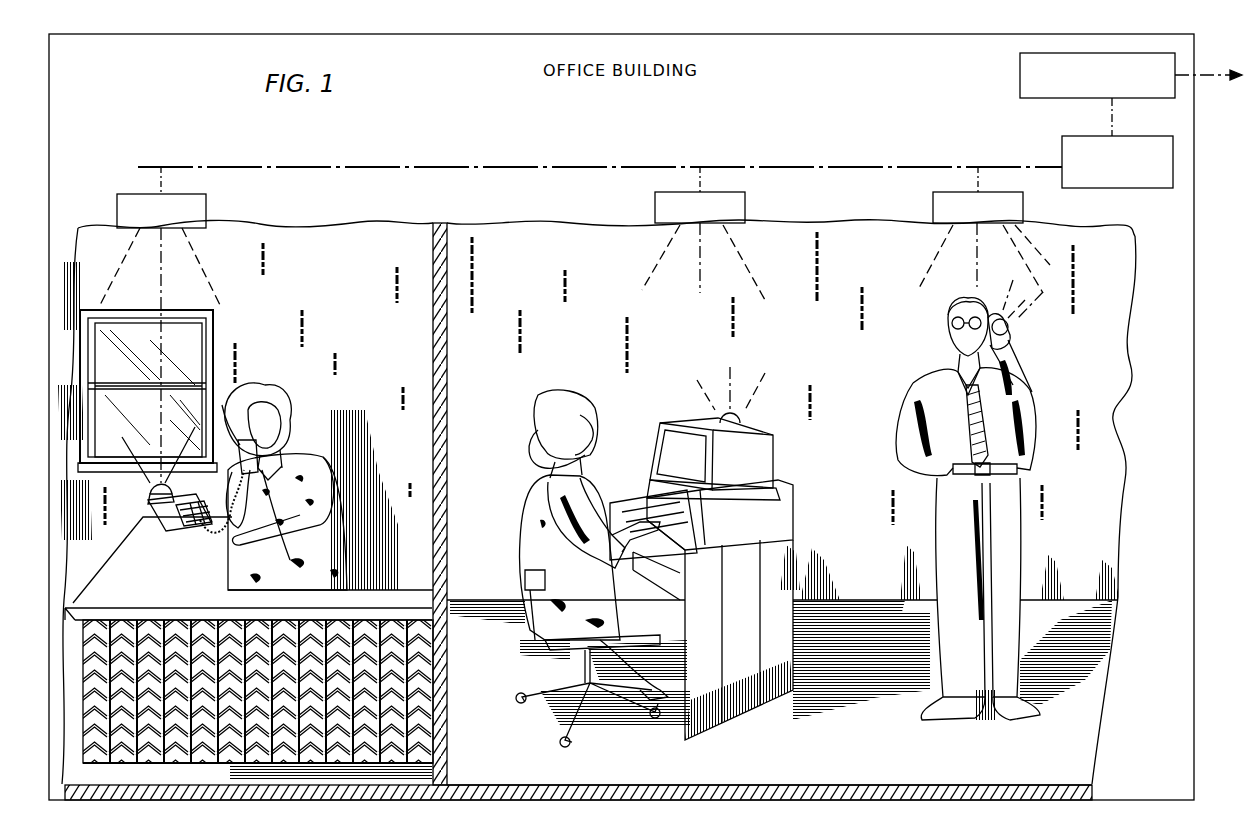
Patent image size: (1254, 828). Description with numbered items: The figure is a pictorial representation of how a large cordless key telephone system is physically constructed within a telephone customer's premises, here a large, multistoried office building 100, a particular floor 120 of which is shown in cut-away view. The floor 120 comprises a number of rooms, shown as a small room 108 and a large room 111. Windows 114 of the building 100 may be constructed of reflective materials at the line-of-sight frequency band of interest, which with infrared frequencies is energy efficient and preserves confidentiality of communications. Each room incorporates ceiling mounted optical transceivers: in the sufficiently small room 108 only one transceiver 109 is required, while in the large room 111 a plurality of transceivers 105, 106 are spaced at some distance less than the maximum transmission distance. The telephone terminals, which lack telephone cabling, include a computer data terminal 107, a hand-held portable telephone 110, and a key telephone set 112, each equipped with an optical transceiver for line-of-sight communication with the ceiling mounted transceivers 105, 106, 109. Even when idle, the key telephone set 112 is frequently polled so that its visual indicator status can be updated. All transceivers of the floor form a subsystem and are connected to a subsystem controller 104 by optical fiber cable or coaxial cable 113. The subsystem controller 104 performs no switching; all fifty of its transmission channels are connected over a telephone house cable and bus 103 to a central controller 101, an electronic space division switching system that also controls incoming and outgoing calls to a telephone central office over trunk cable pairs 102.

The office building 100 is at (1194, 325).
The central controller 101 is at (1022, 73).
The trunk cable pairs 102 is at (1215, 72).
The telephone house cable and bus 103 is at (1112, 127).
The subsystem controller 104 is at (1125, 188).
The optical transceiver 105 is at (933, 212).
The optical transceiver 106 is at (742, 212).
The computer data terminal 107 is at (773, 455).
The room 108 is at (345, 240).
The optical transceiver 109 is at (206, 215).
The hand-held portable telephone 110 is at (1008, 327).
The room 111 is at (1105, 422).
The key telephone set 112 is at (148, 500).
The optical fiber cable or coaxial cable 113 is at (555, 167).
The windows 114 is at (215, 330).
The floor 120 is at (1092, 785).